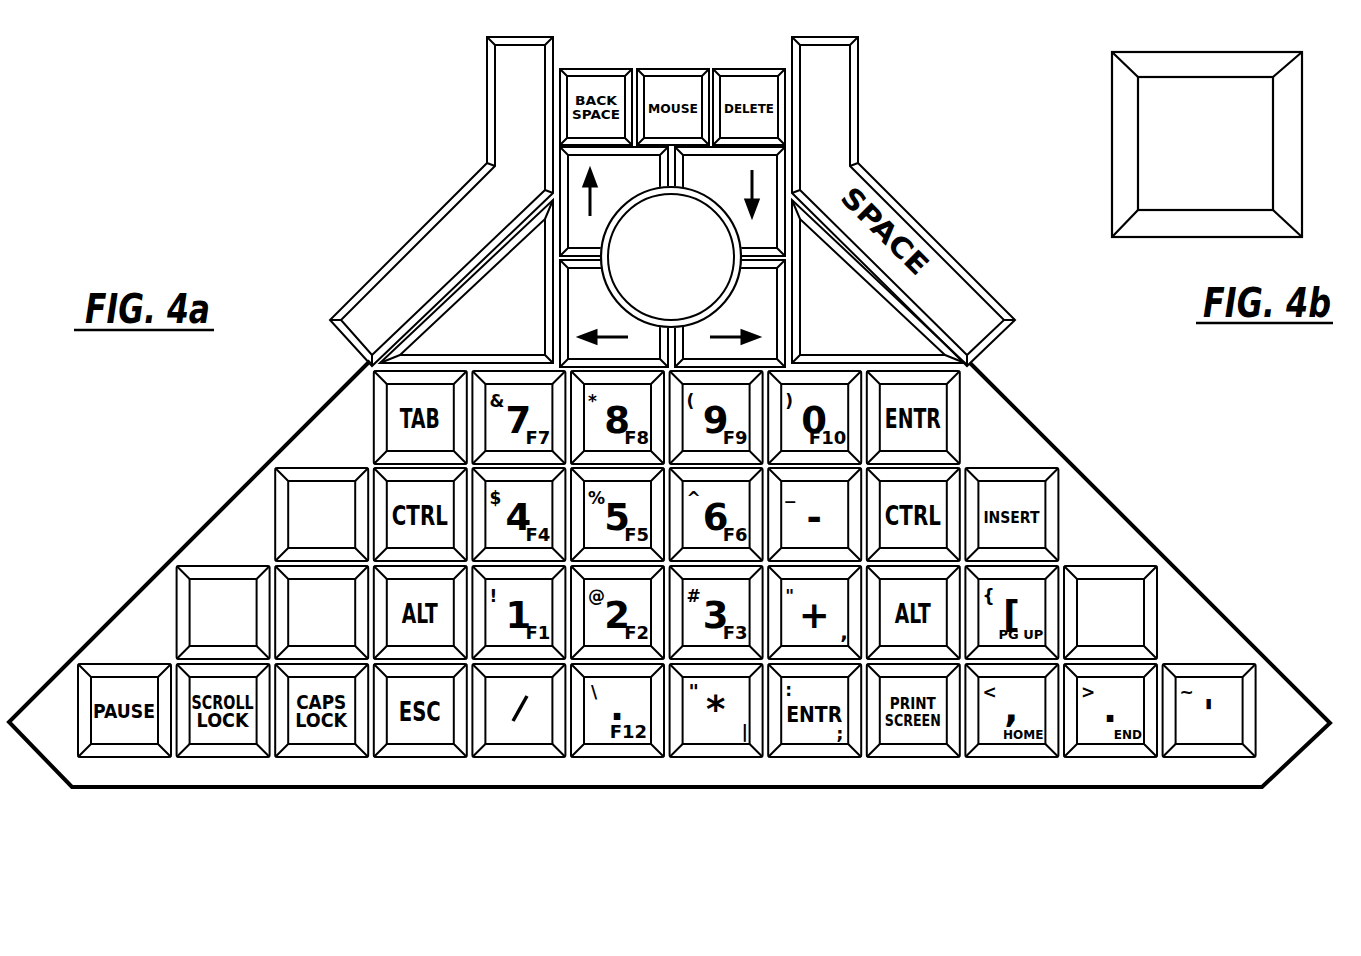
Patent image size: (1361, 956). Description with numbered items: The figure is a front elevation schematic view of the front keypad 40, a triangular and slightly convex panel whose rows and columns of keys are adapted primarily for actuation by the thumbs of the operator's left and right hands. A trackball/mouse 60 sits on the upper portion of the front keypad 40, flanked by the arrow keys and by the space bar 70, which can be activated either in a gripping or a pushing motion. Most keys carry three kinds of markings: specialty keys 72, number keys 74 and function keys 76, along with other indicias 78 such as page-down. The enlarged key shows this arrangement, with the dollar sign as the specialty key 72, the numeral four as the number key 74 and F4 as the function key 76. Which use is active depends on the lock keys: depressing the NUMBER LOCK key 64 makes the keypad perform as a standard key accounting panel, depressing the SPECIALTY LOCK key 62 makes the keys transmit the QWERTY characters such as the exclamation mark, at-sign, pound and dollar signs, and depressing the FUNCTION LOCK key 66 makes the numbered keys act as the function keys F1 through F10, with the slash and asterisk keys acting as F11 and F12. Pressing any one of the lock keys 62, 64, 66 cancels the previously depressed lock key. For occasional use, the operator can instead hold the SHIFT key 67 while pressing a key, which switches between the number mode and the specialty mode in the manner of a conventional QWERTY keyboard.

In FIG. 4A, the front keypad 40 is at (43, 706).
In FIG. 4A, the trackball/mouse 60 is at (657, 270).
In FIG. 4A, the SPECIALTY LOCK key 62 is at (200, 572).
In FIG. 4A, the NUMBER LOCK key 64 is at (285, 489).
In FIG. 4A, the FUNCTION LOCK key 66 is at (303, 587).
In FIG. 4A, the SHIFT key 67 is at (430, 343).
In FIG. 4A, the space bar 70 is at (520, 150).
In FIG. 4A, the specialty keys 72 is at (493, 700).
In FIG. 4B, the specialty keys 72 is at (1148, 108).
In FIG. 4A, the number keys 74 is at (503, 727).
In FIG. 4B, the number keys 74 is at (1185, 163).
In FIG. 4A, the function keys 76 is at (538, 743).
In FIG. 4B, the function keys 76 is at (1233, 203).
In FIG. 4A, the other indicias 78 is at (1132, 592).